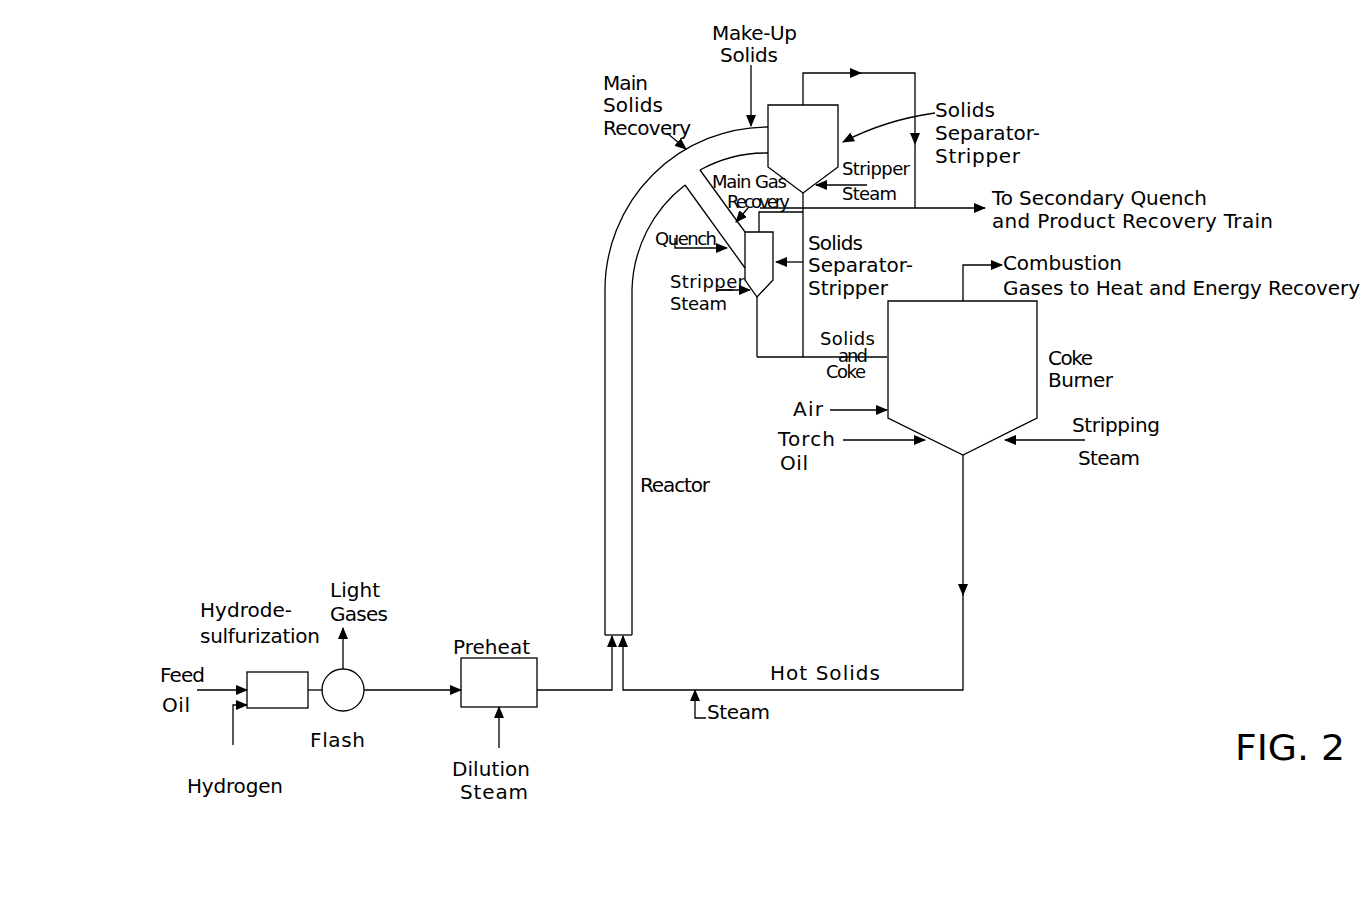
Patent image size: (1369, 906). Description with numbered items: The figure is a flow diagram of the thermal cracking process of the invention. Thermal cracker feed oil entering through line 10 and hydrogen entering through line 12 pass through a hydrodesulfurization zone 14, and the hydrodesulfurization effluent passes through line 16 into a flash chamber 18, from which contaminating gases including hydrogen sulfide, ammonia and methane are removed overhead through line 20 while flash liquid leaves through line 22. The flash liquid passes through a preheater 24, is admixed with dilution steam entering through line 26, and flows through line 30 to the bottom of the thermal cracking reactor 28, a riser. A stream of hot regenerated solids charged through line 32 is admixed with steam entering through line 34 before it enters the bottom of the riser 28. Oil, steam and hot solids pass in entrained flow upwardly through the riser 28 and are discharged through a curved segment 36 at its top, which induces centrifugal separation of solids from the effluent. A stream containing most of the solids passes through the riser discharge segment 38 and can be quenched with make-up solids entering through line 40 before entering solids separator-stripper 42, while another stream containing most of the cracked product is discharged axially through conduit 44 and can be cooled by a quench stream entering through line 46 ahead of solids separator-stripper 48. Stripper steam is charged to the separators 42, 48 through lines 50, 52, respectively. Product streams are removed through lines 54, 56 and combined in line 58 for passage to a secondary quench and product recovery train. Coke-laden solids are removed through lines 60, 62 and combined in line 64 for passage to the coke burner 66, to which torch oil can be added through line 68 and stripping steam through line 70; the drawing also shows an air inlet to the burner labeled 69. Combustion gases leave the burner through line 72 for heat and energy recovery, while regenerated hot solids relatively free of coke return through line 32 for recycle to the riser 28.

The feed oil line 10 is at (211, 687).
The hydrogen line 12 is at (238, 733).
The hydrodesulfurization zone 14 is at (260, 708).
The hydrodesulfurization effluent line 16 is at (315, 698).
The flash chamber 18 is at (362, 697).
The overhead gas line 20 is at (346, 653).
The flash liquid line 22 is at (416, 693).
The preheater 24 is at (538, 658).
The dilution steam line 26 is at (503, 727).
The thermal cracking reactor 28 is at (636, 529).
The reactor feed line 30 is at (556, 688).
The hot solids line 32 is at (694, 688).
The steam line 34 is at (692, 706).
The curved segment 36 is at (628, 207).
The riser discharge segment 38 is at (763, 150).
The make-up solids line 40 is at (759, 110).
The solids separator-stripper 42 is at (842, 118).
The axial discharge conduit 44 is at (699, 207).
The quench stream line 46 is at (740, 258).
The solids separator-stripper 48 is at (764, 233).
The stripper steam line 50 is at (806, 199).
The stripper steam line 52 is at (733, 290).
The product stream line 54 is at (825, 72).
The product stream line 56 is at (824, 207).
The combined product line 58 is at (924, 208).
The coke-laden solids line 60 is at (804, 328).
The coke-laden solids line 62 is at (760, 330).
The combined solids line 64 is at (824, 361).
The coke burner 66 is at (1047, 322).
The torch oil line 68 is at (884, 441).
The air line 69 is at (849, 412).
The stripping steam line 70 is at (1041, 444).
The combustion gas line 72 is at (966, 265).